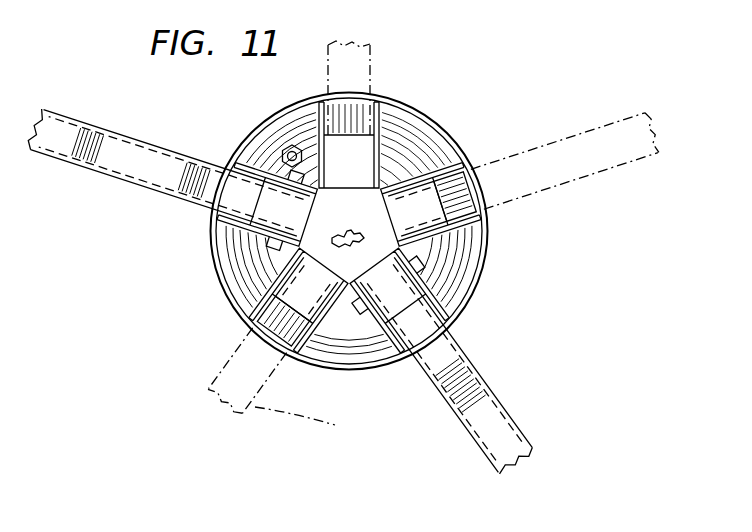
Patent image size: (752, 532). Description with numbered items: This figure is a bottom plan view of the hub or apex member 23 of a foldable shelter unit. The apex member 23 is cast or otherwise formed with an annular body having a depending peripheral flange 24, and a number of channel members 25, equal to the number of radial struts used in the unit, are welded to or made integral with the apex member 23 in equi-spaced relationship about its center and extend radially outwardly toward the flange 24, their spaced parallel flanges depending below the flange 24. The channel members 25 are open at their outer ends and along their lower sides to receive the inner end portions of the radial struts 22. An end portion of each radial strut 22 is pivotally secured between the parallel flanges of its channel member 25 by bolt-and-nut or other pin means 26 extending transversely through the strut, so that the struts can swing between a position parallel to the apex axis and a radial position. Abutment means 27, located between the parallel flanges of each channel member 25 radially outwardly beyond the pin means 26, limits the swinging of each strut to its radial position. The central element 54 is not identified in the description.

The radial strut 22 is at (130, 186).
The apex member 23 is at (414, 99).
The peripheral flange 24 is at (440, 130).
The channel member 25 is at (432, 293).
The pin means 26 is at (280, 172).
The abutment means 27 is at (345, 110).
The hub 54 is at (345, 228).